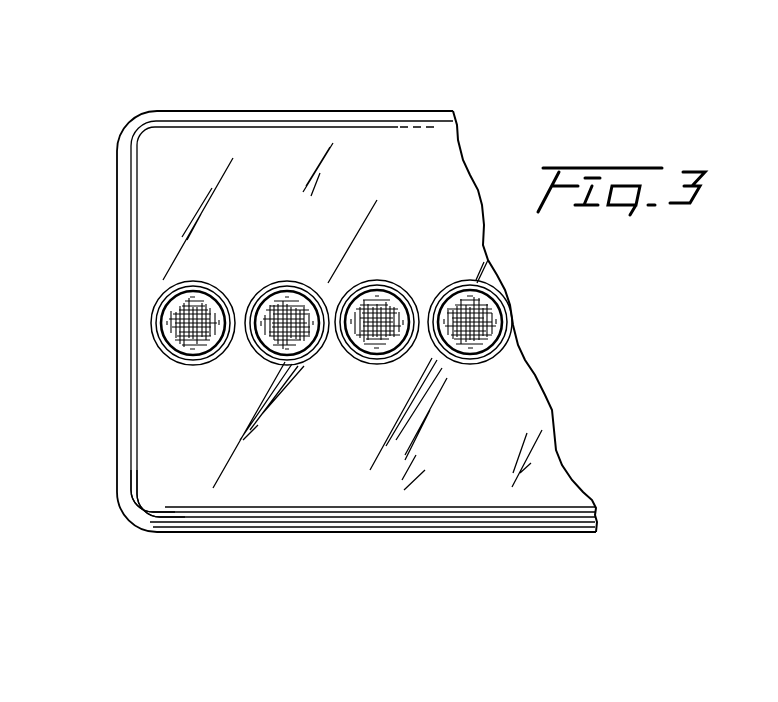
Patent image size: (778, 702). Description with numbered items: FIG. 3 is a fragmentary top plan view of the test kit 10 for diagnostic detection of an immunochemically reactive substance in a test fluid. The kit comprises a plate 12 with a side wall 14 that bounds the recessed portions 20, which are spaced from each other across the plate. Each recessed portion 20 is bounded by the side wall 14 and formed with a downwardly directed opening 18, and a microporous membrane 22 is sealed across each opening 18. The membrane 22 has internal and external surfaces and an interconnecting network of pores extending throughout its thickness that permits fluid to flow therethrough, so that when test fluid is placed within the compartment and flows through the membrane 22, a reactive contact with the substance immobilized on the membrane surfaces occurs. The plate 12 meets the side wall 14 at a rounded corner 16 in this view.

The filter panel assembly 10 is at (183, 98).
The bottom edge strip 12 is at (287, 531).
The frame 14 is at (117, 291).
The inner corner flange 16 is at (127, 481).
The panel face 18 is at (180, 490).
The circular aperture ring 20 is at (183, 365).
The screen mesh 22 is at (265, 318).